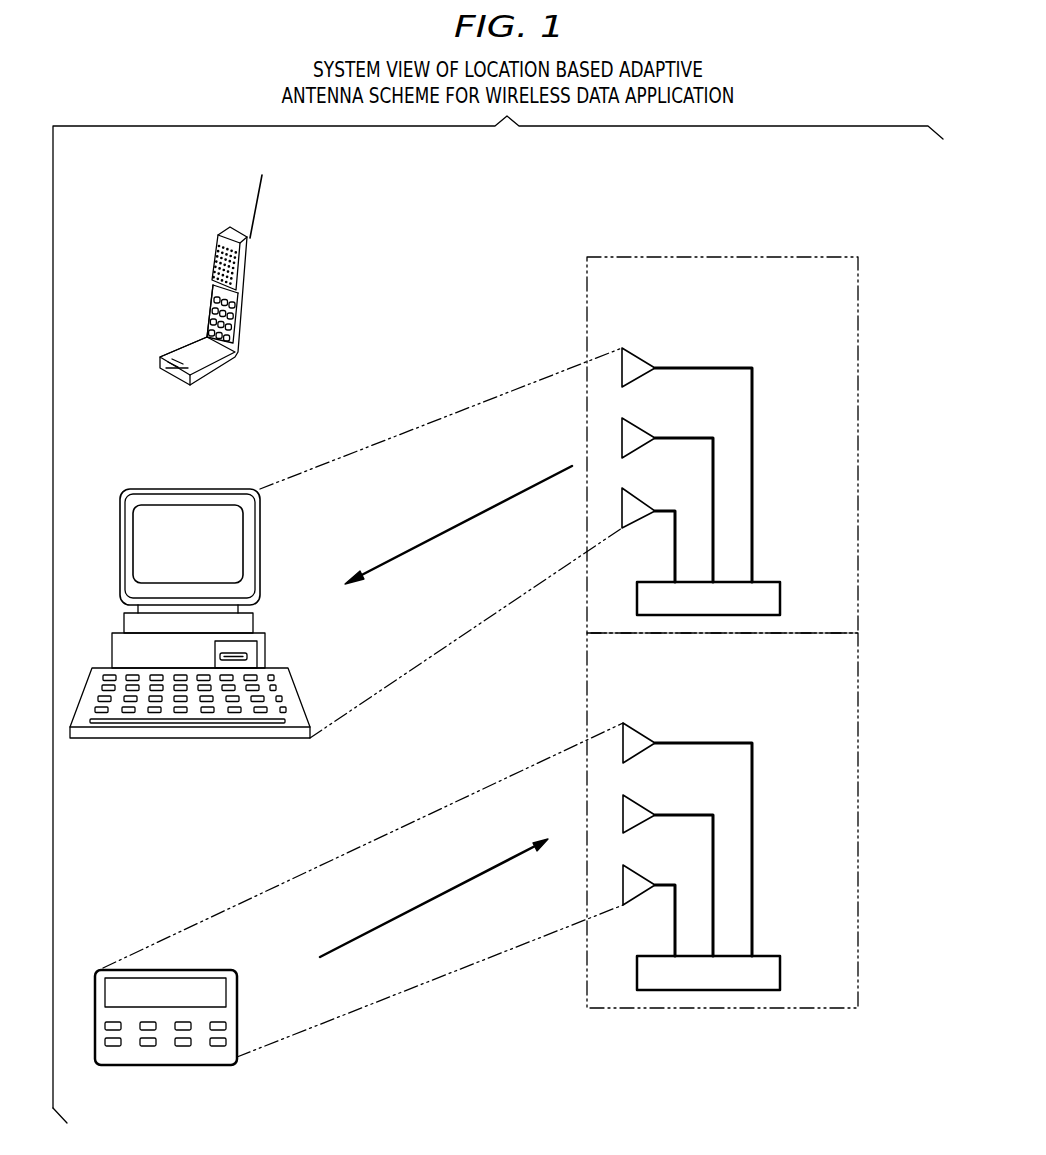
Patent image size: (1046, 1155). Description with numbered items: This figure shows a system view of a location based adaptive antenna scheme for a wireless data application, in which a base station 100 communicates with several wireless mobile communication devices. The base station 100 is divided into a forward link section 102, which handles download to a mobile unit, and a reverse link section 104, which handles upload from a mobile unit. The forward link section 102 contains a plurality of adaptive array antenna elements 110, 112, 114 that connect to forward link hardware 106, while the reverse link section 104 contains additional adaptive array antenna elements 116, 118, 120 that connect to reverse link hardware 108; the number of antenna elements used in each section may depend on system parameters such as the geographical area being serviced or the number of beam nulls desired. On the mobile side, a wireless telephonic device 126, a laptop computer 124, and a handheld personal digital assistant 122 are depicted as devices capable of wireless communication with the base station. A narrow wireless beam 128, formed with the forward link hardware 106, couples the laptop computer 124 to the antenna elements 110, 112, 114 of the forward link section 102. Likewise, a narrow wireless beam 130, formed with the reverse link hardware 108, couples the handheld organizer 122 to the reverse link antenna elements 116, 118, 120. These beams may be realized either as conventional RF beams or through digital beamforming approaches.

The base station 100 is at (835, 208).
The forward link section 102 is at (818, 352).
The reverse link section 104 is at (819, 727).
The forward link hardware 106 is at (781, 597).
The reverse link hardware 108 is at (781, 972).
The adaptive array antenna element 110 is at (640, 355).
The adaptive array antenna element 112 is at (640, 426).
The adaptive array antenna element 114 is at (640, 496).
The adaptive array antenna element 116 is at (640, 733).
The adaptive array antenna element 118 is at (640, 803).
The adaptive array antenna element 120 is at (640, 874).
The handheld personal digital assistant 122 is at (160, 1066).
The laptop computer 124 is at (178, 490).
The wireless telephonic device 126 is at (213, 262).
The narrow wireless beam 128 is at (455, 527).
The narrow wireless beam 130 is at (447, 892).